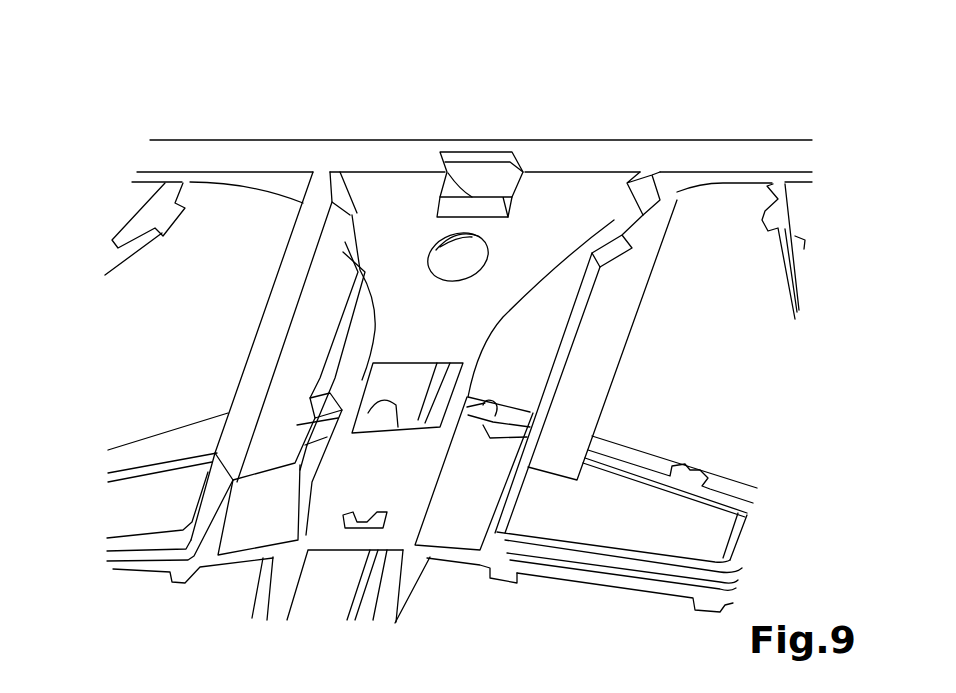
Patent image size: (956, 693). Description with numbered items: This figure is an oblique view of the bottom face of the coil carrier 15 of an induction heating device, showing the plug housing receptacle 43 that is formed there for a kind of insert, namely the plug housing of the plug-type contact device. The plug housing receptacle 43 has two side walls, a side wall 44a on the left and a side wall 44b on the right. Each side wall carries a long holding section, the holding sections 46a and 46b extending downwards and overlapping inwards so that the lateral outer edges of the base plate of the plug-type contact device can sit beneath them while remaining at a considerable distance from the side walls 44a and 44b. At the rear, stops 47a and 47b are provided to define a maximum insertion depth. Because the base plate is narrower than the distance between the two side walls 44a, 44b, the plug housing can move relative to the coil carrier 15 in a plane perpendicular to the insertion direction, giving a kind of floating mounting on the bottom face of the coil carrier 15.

The coil carrier 15 is at (668, 152).
The plug housing receptacle 43 is at (405, 193).
The side wall 44a is at (348, 227).
The side wall 44b is at (627, 210).
The holding section 46a is at (330, 340).
The holding section 46b is at (585, 333).
The stop 47a is at (310, 425).
The stop 47b is at (500, 427).